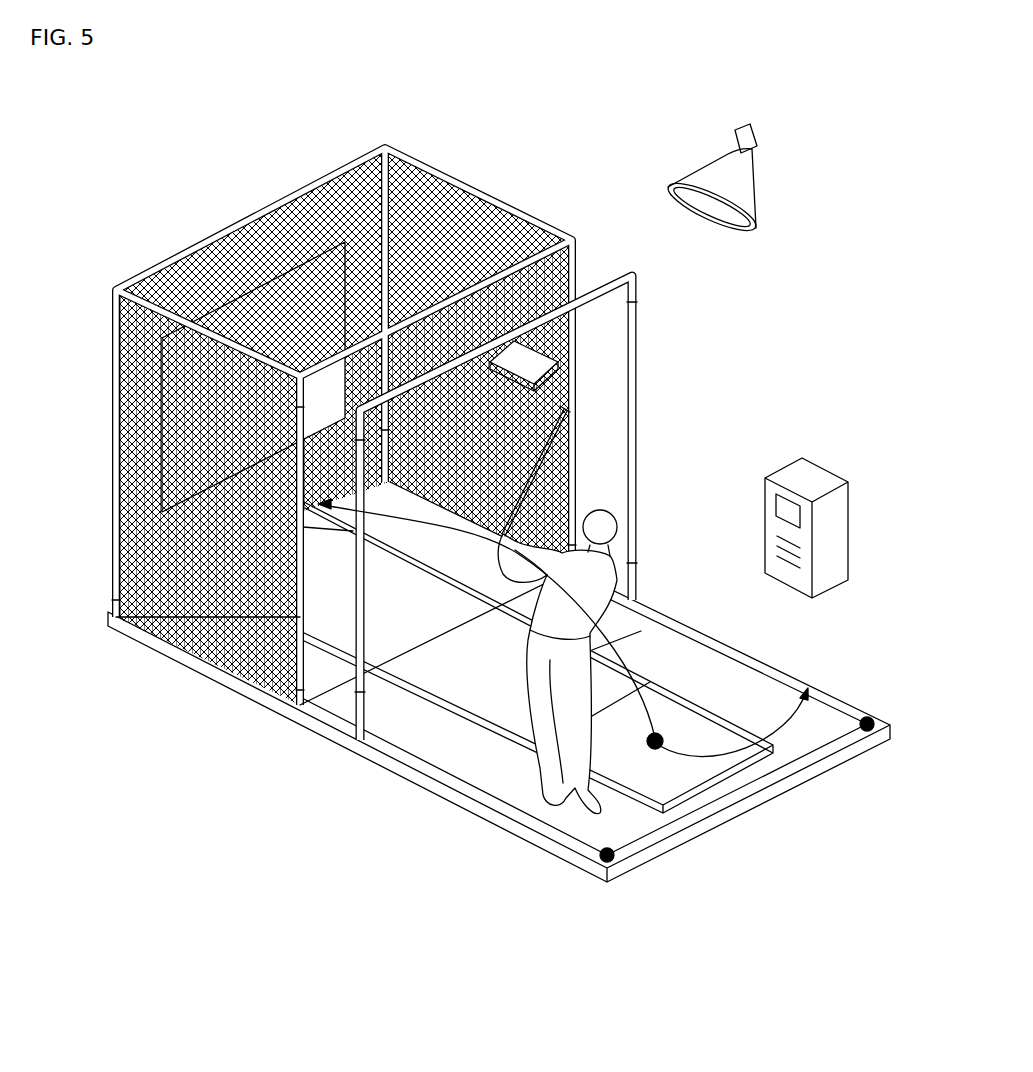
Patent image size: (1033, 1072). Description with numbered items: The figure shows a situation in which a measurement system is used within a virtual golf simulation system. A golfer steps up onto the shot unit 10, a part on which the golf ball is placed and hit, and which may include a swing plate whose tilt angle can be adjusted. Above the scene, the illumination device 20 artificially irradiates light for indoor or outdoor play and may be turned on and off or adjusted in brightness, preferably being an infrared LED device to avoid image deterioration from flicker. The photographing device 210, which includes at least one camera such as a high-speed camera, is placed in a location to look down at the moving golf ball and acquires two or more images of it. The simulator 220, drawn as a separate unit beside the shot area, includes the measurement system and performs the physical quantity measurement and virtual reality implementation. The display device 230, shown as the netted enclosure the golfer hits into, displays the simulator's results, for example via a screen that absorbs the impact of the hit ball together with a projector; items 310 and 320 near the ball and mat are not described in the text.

The shot unit 10 is at (680, 778).
The illumination device 20 is at (708, 160).
The photographing device 210 is at (582, 340).
The simulator 220 is at (818, 462).
The display device 230 is at (218, 234).
The hitting mat 310 is at (790, 727).
The ball trajectory sensing unit 320 is at (643, 622).